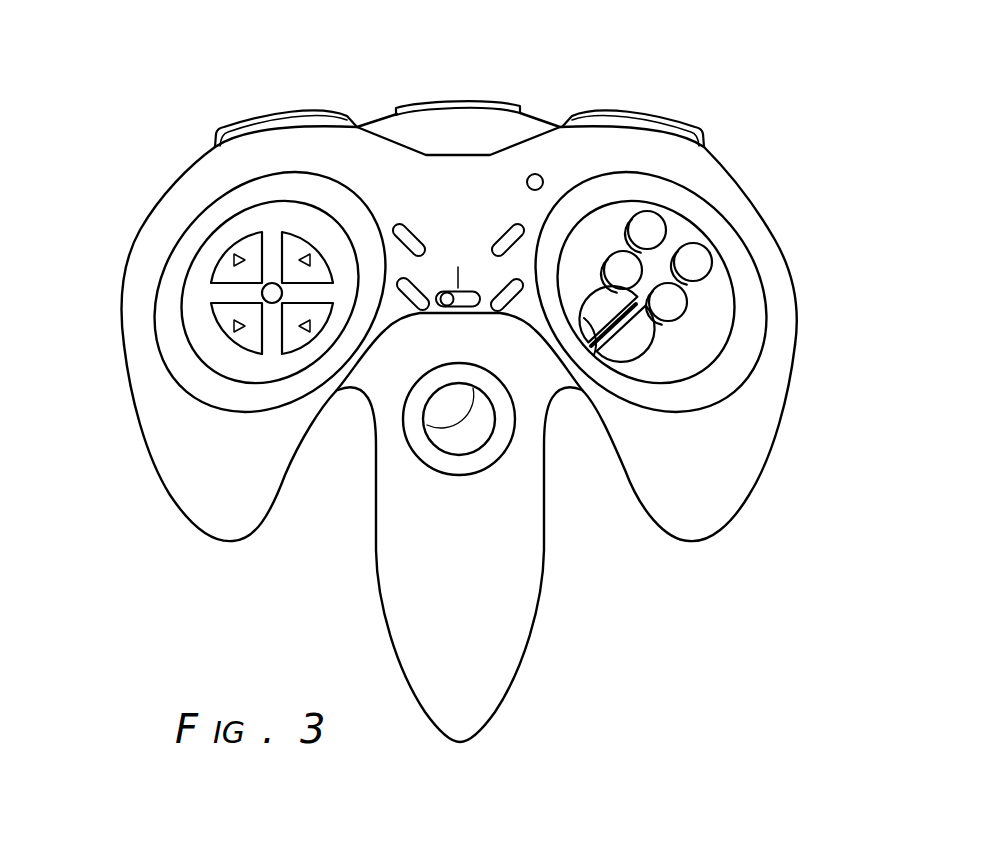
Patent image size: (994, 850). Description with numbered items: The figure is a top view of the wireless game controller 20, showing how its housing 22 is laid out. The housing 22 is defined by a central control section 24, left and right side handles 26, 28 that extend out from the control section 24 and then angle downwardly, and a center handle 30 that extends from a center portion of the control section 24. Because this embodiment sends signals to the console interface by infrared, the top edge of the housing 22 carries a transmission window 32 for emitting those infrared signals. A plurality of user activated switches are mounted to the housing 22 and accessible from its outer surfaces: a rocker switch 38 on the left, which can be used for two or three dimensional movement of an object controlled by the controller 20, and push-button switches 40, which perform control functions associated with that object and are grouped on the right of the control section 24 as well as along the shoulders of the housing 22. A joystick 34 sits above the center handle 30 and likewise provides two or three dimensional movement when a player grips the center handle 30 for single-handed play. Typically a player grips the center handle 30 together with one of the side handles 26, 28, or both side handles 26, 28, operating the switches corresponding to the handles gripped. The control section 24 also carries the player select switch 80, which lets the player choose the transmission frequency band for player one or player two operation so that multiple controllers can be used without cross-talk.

The controller 20 is at (690, 648).
The housing 22 is at (770, 204).
The control section 24 is at (438, 207).
The left side handle 26 is at (208, 518).
The right side handle 28 is at (705, 527).
The center handle 30 is at (458, 730).
The transmission window 32 is at (491, 101).
The joystick 34 is at (482, 432).
The rocker switch 38 is at (243, 247).
The push-button switches 40 is at (240, 124).
The player select switch 80 is at (458, 307).